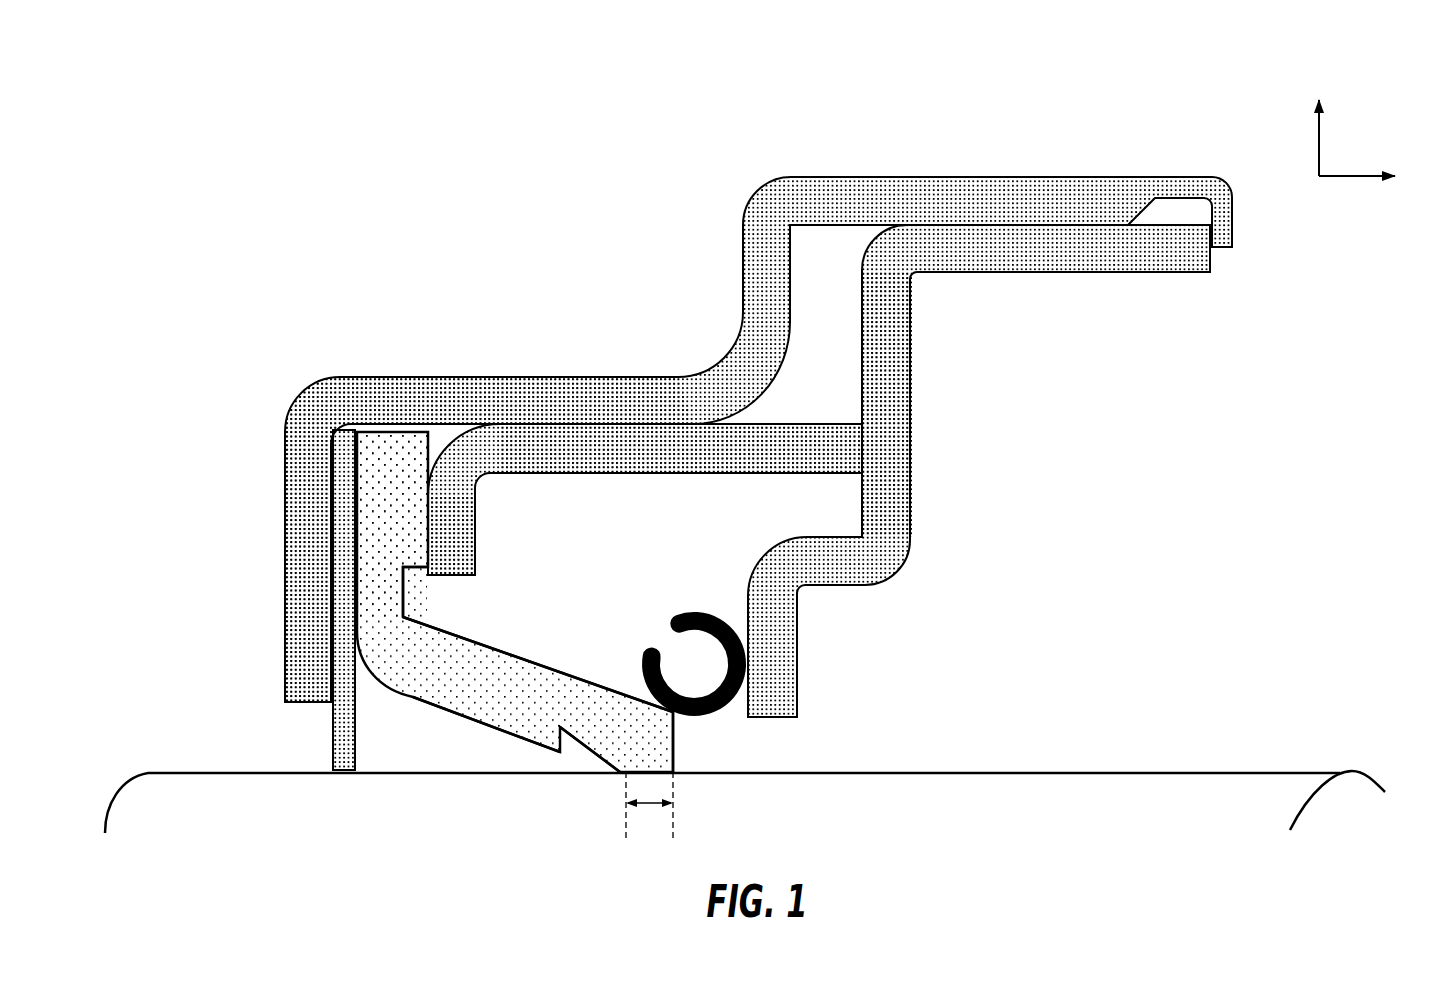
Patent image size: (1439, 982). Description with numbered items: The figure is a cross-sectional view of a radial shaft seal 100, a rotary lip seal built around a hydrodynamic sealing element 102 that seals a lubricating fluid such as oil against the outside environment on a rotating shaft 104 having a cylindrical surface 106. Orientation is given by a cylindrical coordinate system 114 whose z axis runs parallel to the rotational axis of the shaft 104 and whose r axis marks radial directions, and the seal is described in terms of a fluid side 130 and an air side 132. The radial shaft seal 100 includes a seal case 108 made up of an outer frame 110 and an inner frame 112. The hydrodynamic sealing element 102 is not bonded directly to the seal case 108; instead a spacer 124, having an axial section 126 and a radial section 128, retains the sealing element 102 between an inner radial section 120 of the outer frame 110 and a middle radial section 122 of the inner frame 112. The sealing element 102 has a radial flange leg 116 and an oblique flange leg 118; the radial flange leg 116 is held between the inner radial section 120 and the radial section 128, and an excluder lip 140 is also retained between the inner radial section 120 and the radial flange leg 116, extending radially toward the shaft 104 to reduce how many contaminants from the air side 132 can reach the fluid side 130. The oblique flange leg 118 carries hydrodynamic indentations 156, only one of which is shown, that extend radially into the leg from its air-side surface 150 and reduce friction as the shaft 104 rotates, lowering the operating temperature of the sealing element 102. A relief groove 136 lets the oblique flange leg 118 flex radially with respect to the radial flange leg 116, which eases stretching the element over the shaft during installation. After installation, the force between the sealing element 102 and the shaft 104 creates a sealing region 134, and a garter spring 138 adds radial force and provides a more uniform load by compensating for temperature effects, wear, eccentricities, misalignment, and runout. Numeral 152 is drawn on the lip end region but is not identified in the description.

The radial shaft seal 100 is at (170, 198).
The hydrodynamic sealing element 102 is at (560, 671).
The shaft 104 is at (171, 811).
The cylindrical surface 106 is at (955, 772).
The seal case 108 is at (715, 317).
The outer frame 110 is at (512, 376).
The inner frame 112 is at (912, 497).
The cylindrical coordinate system 114 is at (1373, 108).
The radial flange leg 116 is at (371, 510).
The oblique flange leg 118 is at (496, 714).
The inner radial section 120 is at (288, 559).
The middle radial section 122 is at (870, 463).
The spacer 124 is at (477, 522).
The axial section 126 is at (636, 463).
The radial section 128 is at (433, 559).
The fluid side 130 is at (1114, 604).
The air side 132 is at (134, 604).
The sealing region 134 is at (649, 805).
The relief groove 136 is at (423, 593).
The garter spring 138 is at (690, 612).
The excluder lip 140 is at (332, 727).
The air-side surface 150 is at (443, 711).
The lip end face 152 is at (680, 757).
The hydrodynamic indentation 156 is at (580, 745).